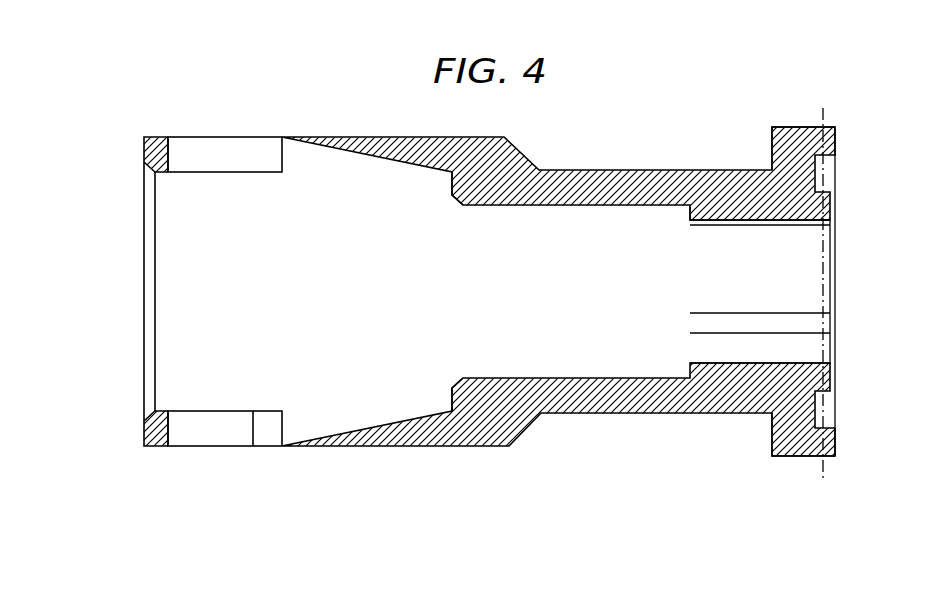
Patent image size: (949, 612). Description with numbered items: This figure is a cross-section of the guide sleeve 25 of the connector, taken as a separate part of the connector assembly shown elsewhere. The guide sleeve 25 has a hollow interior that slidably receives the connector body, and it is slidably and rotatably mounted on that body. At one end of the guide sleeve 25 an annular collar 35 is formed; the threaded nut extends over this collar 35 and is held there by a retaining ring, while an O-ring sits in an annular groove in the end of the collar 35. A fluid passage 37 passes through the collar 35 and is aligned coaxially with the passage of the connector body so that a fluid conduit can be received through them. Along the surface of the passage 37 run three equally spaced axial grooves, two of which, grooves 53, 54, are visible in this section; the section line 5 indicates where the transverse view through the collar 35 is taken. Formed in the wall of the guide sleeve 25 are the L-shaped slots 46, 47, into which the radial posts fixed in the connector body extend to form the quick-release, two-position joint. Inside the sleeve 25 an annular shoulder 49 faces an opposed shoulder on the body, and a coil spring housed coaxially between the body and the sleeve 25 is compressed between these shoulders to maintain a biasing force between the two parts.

The guide sleeve 25 is at (654, 450).
The annular collar 35 is at (772, 148).
The fluid passage 37 is at (790, 259).
The L-shaped slot 46 is at (216, 146).
The L-shaped slot 47 is at (210, 433).
The annular shoulder 49 is at (449, 183).
The groove 53 is at (807, 323).
The groove 54 is at (723, 226).
The section line 5- 5 is at (823, 108).